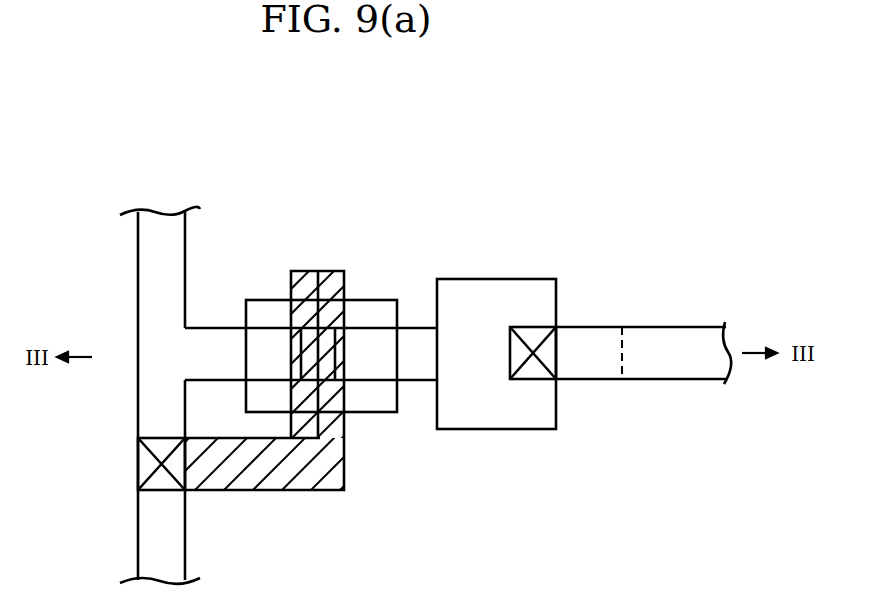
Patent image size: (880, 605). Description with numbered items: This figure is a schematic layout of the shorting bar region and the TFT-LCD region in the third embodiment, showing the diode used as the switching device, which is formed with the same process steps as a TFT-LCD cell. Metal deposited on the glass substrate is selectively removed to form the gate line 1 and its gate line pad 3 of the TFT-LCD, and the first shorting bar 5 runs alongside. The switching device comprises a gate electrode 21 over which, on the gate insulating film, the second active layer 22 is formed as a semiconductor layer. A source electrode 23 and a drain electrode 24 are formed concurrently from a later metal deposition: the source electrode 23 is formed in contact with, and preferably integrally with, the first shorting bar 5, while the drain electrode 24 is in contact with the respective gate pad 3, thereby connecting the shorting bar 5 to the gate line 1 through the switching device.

The gate line 1 is at (673, 347).
The gate line pad 3 is at (582, 347).
The first shorting bar 5 is at (150, 397).
The gate electrode 21 is at (333, 283).
The second active layer 22 is at (368, 395).
The source electrode 23 is at (222, 352).
The drain electrode 24 is at (506, 413).